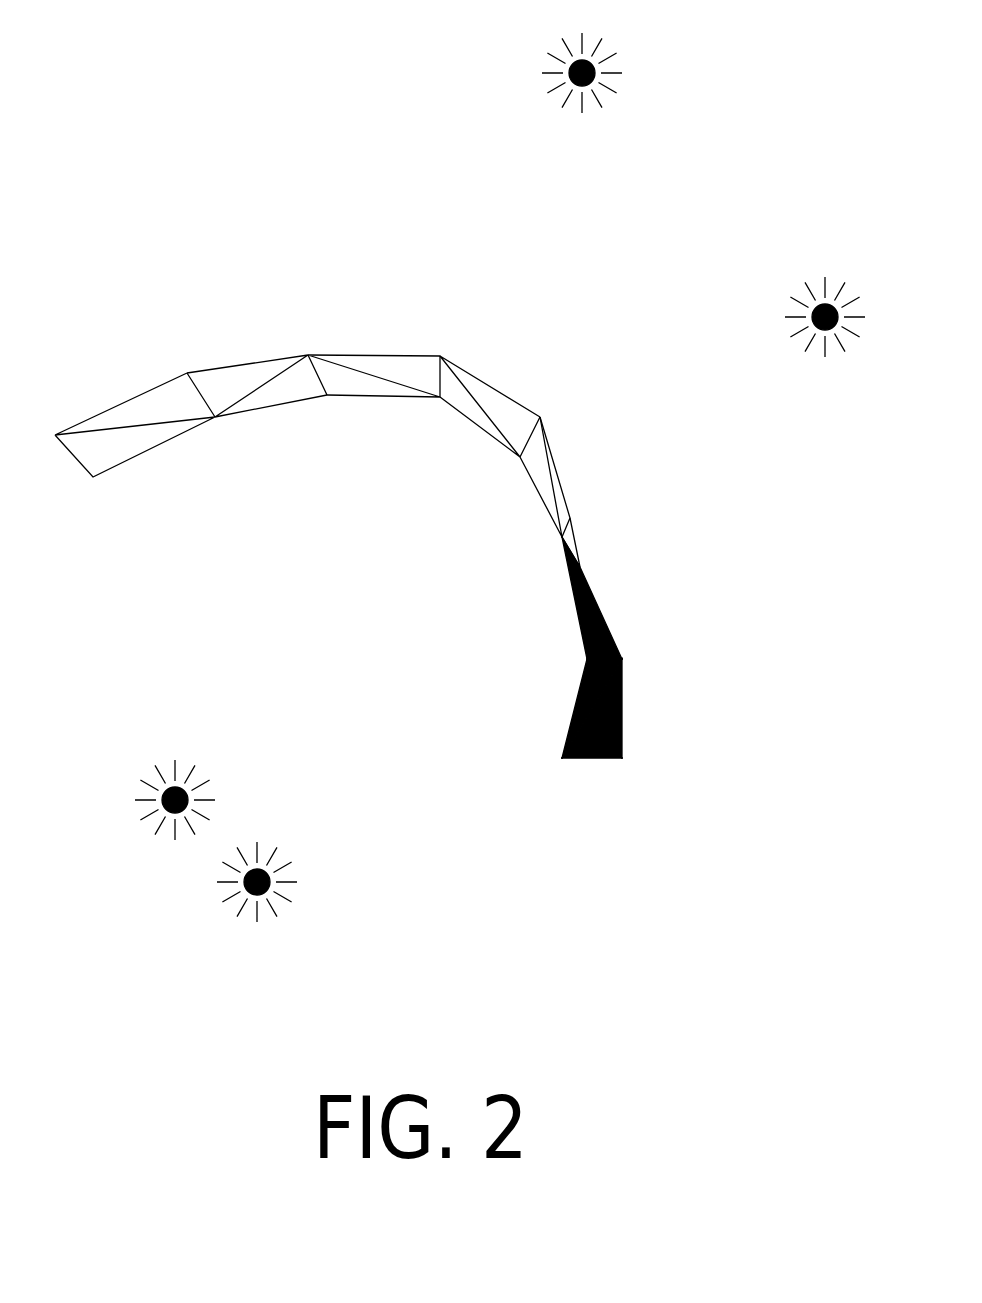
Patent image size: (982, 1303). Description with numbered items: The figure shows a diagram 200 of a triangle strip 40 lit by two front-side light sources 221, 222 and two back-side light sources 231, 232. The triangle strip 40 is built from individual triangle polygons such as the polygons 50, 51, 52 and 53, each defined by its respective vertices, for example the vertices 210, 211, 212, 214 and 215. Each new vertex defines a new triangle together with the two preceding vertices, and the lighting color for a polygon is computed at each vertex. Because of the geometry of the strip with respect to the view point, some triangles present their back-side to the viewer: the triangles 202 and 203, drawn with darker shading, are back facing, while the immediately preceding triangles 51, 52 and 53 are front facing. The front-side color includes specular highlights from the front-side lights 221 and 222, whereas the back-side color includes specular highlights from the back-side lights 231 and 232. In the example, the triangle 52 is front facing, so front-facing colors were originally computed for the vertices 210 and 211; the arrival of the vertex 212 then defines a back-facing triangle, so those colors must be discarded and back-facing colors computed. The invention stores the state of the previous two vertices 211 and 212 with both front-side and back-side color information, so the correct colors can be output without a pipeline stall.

The solar concentrator system 200 is at (239, 100).
The triangle strip 40 is at (278, 345).
The triangle polygon 50 is at (87, 478).
The triangle polygon 51 is at (564, 478).
The triangle polygon 52 is at (583, 537).
The triangle polygon 53 is at (531, 483).
The triangle polygon 202 is at (568, 598).
The triangle polygon 203 is at (631, 719).
The vertex 210 is at (560, 536).
The vertex 211 is at (588, 659).
The vertex 212 is at (624, 659).
The vertex 214 is at (563, 760).
The vertex 215 is at (624, 760).
The front-side light source 221 is at (623, 96).
The front-side light source 222 is at (805, 275).
The back-side light source 231 is at (219, 788).
The back-side light source 232 is at (301, 890).